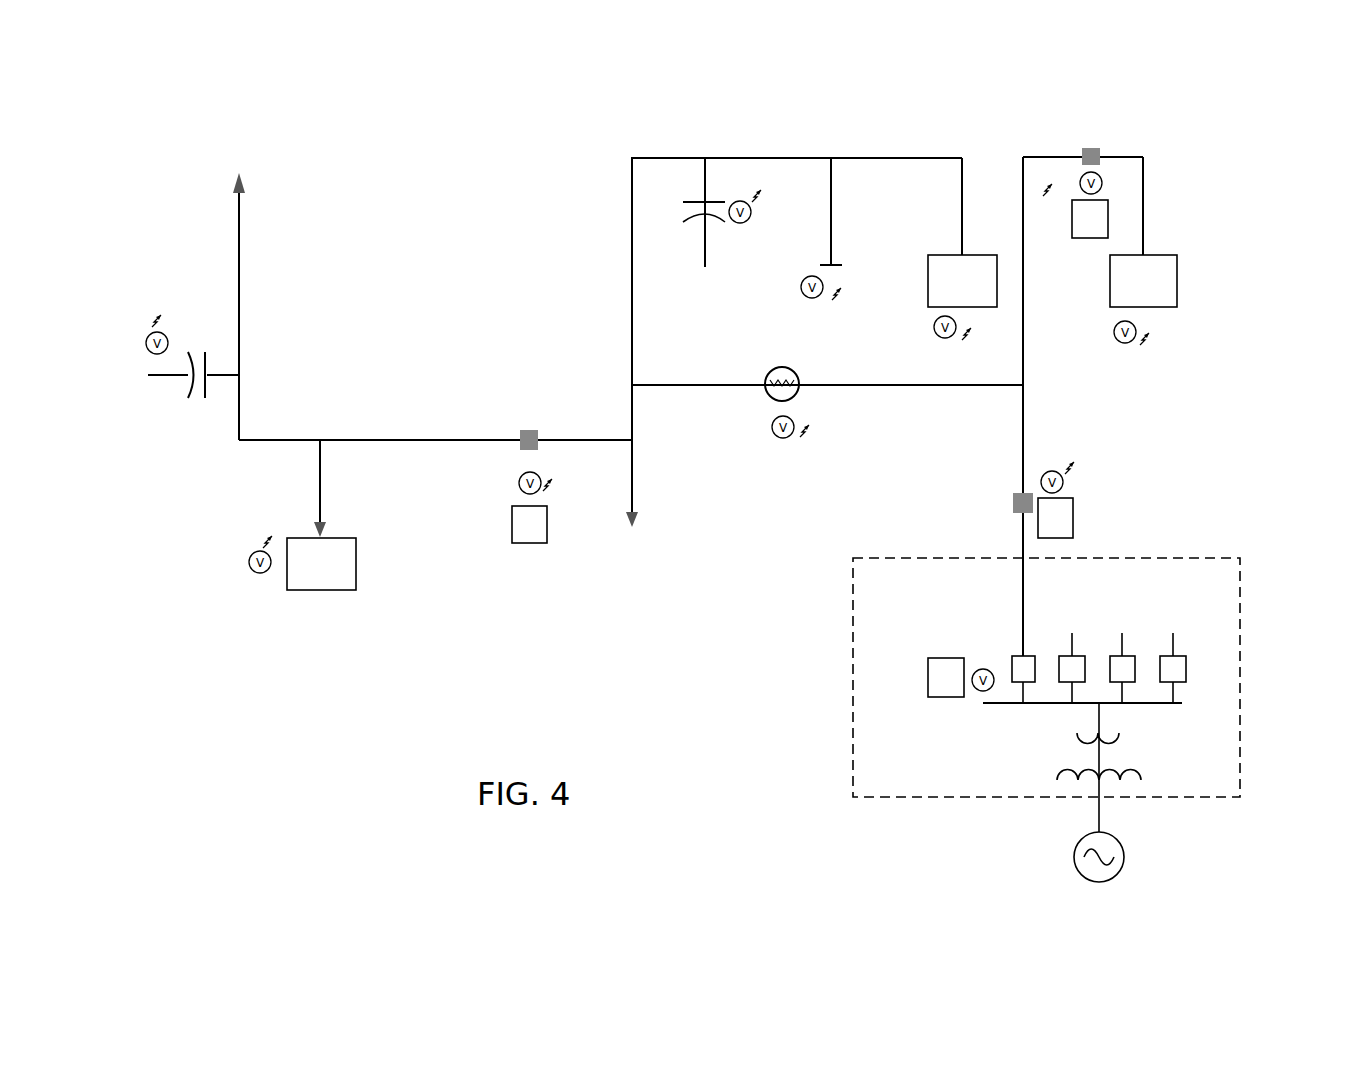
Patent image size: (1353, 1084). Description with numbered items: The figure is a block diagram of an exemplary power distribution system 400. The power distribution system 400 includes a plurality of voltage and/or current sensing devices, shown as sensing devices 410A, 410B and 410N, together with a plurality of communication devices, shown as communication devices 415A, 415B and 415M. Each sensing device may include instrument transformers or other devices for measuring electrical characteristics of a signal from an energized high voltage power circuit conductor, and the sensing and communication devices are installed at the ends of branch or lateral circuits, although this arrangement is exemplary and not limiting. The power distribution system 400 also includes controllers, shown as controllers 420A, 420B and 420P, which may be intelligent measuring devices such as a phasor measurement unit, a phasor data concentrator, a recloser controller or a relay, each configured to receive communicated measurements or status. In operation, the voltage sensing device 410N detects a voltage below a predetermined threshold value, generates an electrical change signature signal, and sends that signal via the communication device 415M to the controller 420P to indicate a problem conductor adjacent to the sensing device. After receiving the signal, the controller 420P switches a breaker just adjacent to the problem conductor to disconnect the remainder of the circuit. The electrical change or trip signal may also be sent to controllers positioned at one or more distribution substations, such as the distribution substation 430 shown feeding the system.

The power distribution system 400 is at (506, 305).
The voltage and/or current sensing device 410A is at (147, 352).
The communication device 415A is at (160, 310).
The controller 420A is at (511, 528).
The voltage and/or current sensing device 410B is at (772, 437).
The communication device 415B is at (833, 411).
The controller 420B is at (1073, 233).
The voltage sensing device 410N is at (1118, 345).
The communication device 415M is at (1172, 328).
The controller 420P is at (1074, 520).
The distribution substation 430 is at (1240, 660).